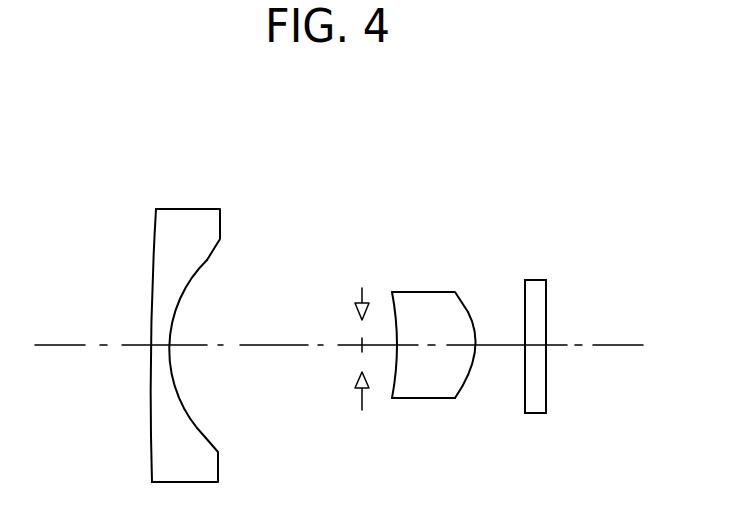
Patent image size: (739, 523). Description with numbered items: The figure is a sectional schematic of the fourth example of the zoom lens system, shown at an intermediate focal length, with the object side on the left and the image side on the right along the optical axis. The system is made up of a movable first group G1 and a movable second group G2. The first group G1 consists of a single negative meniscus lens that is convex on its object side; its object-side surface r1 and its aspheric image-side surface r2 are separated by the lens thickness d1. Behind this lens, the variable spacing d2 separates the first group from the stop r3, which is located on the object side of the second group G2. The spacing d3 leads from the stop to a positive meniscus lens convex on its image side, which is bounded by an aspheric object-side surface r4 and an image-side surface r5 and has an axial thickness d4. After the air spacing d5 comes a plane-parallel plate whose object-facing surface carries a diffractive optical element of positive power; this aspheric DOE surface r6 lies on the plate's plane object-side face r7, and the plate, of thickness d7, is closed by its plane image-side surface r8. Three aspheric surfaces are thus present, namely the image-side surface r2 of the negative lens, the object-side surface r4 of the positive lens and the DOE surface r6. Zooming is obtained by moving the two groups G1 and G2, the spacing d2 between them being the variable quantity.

The first group G1 is at (225, 151).
The second group G2 is at (556, 157).
The object-side surface of negative meniscus lens r1 is at (152, 253).
The image-side surface of negative meniscus lens r2 is at (207, 260).
The stop r3 is at (360, 330).
The object-side surface of positive meniscus lens r4 is at (395, 328).
The image-side surface of positive meniscus lens r5 is at (468, 312).
The DOE surface r6 is at (525, 302).
The object-side surface of plane-parallel plate r7 is at (535, 346).
The image-side surface of plane-parallel plate r8 is at (546, 303).
The spacing between first and second lens surfaces d1 is at (163, 347).
The spacing between second lens surface and stop d2 is at (280, 370).
The spacing between stop and positive meniscus lens d3 is at (381, 352).
The spacing between surfaces of positive meniscus lens d4 is at (425, 372).
The spacing between positive meniscus lens and plate d5 is at (499, 372).
The spacing between plate surfaces d7 is at (528, 347).